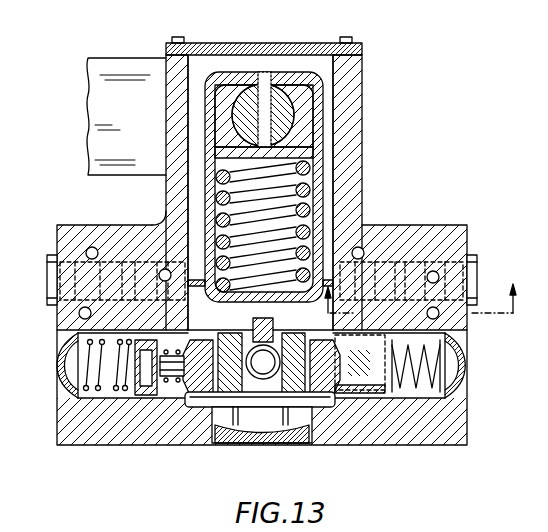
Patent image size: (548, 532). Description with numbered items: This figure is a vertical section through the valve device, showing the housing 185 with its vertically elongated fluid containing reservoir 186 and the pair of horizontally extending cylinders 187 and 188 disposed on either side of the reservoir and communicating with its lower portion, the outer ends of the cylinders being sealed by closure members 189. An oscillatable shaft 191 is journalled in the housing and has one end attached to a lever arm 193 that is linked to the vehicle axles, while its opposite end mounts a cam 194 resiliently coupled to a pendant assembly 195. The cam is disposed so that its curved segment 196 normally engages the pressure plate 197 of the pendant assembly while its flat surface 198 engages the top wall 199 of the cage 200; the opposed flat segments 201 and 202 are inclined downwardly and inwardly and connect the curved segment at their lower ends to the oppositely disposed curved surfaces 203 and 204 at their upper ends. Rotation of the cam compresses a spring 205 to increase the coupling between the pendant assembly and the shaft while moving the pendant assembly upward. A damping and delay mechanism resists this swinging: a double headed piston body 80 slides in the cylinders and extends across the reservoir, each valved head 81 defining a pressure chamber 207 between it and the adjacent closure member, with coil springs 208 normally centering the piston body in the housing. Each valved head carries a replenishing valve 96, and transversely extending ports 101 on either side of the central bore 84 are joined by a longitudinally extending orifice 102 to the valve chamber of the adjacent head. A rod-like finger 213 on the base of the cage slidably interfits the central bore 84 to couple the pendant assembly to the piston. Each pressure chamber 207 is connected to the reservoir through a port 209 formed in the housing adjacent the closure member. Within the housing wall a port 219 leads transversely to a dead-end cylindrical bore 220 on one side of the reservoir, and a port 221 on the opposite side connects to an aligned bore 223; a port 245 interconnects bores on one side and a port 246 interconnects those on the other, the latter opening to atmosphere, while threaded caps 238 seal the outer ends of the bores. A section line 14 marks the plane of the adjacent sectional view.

The section line 14 is at (427, 304).
The piston body 80 is at (225, 388).
The valved head 81 is at (150, 397).
The central bore 84 is at (262, 385).
The replenishing valve 96 is at (166, 380).
The transversely extending port 101 is at (210, 345).
The longitudinally extending orifice 102 is at (196, 372).
The housing 185 is at (366, 178).
The fluid containing reservoir 186 is at (362, 204).
The cylinder 187 is at (102, 392).
The cylinder 188 is at (410, 390).
The closure member 189 is at (55, 373).
The oscillatable shaft 191 is at (300, 103).
The lever arm 193 is at (131, 52).
The cam 194 is at (295, 120).
The pendant assembly 195 is at (193, 160).
The curved segment 196 is at (246, 170).
The pressure plate 197 is at (312, 153).
The flat surface 198 is at (272, 70).
The top wall 199 is at (230, 72).
The cage 200 is at (205, 112).
The flat segment 201 is at (262, 130).
The flat segment 202 is at (298, 140).
The curved surface 203 is at (200, 115).
The curved surface 204 is at (312, 82).
The spring 205 is at (303, 232).
The pressure chamber 207 is at (107, 355).
The coil spring 208 is at (85, 365).
The port 209 is at (91, 313).
The finger 213 is at (268, 325).
The port 219 is at (364, 250).
The dead-end cylindrical bore 220 is at (420, 258).
The port 221 is at (90, 247).
The bore 223 is at (122, 260).
The threaded cap 238 is at (50, 267).
The port 245 is at (437, 272).
The port 246 is at (166, 269).